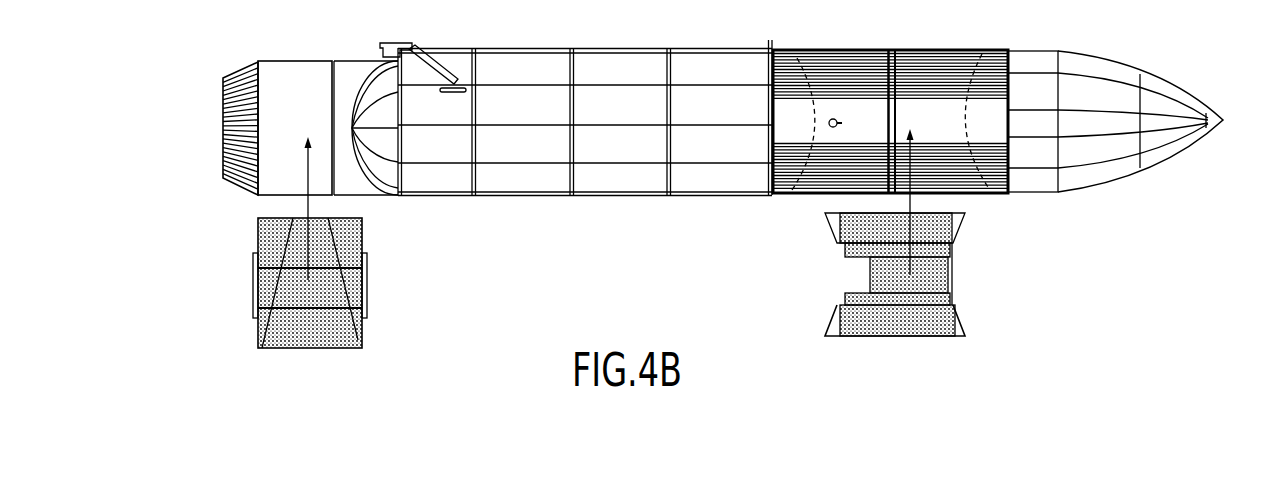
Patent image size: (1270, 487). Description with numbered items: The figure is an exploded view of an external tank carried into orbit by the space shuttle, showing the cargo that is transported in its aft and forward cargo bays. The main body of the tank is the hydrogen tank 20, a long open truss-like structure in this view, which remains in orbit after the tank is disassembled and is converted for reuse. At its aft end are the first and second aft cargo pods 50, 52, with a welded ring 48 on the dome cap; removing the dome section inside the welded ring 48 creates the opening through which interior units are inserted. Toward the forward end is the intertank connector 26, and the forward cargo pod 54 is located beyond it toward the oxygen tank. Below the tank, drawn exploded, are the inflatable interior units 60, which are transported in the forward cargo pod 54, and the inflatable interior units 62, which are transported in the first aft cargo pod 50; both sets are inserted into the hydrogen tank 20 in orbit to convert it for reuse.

The hydrogen tank 20 is at (612, 180).
The intertank connector 26 is at (858, 52).
The welded ring 48 is at (355, 96).
The first aft cargo pod 50 is at (350, 77).
The second aft cargo pod 52 is at (277, 72).
The forward cargo pod 54 is at (932, 80).
The inflatable interior units 60 is at (930, 325).
The inflatable interior units 62 is at (330, 335).